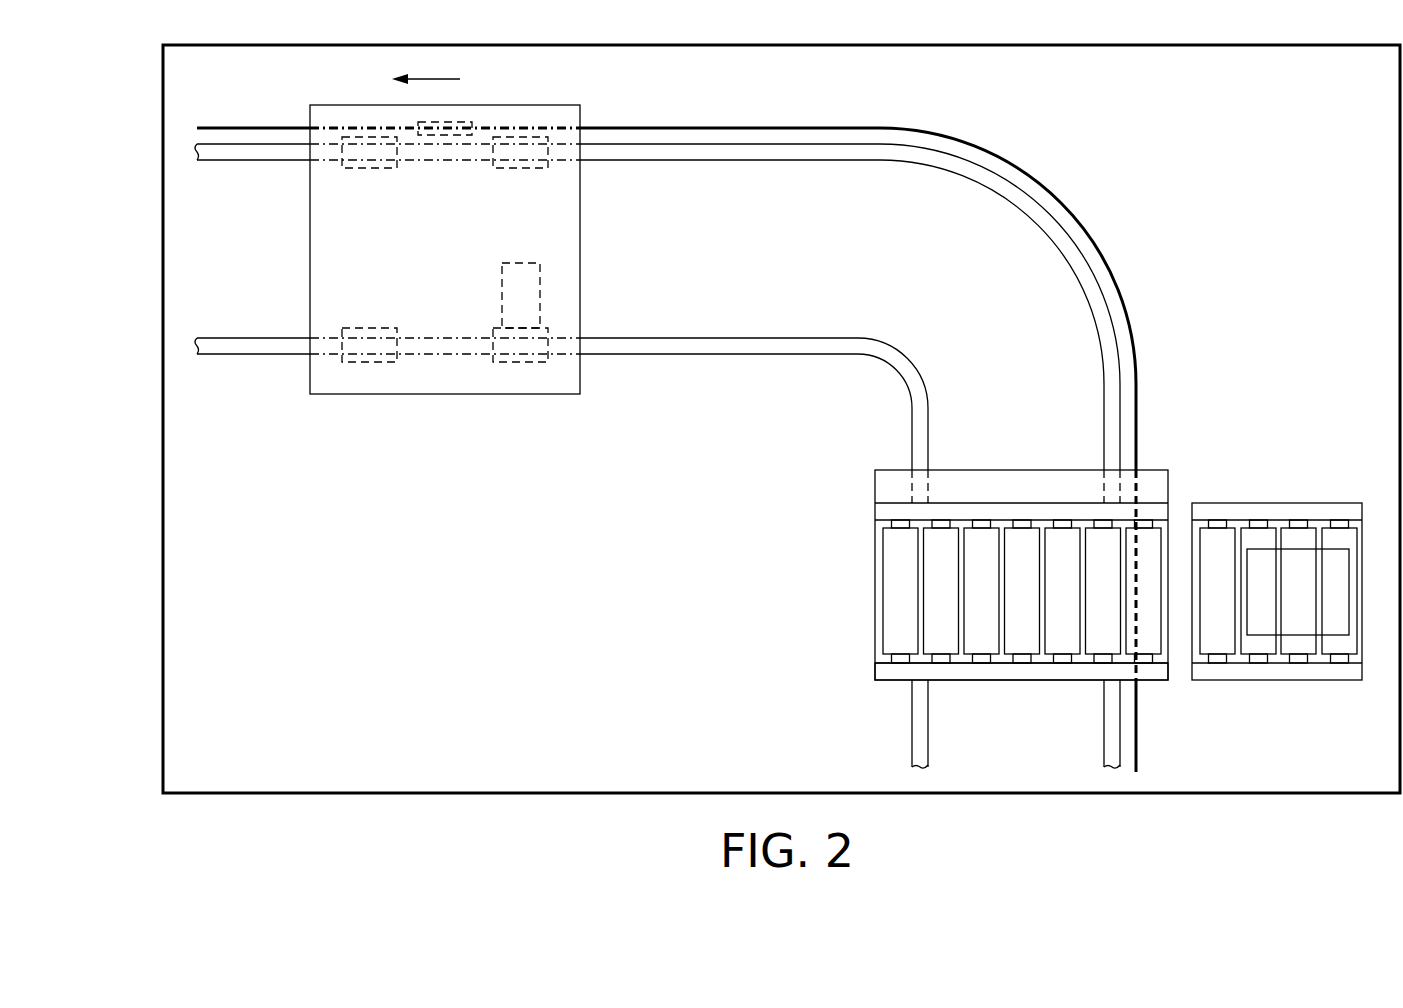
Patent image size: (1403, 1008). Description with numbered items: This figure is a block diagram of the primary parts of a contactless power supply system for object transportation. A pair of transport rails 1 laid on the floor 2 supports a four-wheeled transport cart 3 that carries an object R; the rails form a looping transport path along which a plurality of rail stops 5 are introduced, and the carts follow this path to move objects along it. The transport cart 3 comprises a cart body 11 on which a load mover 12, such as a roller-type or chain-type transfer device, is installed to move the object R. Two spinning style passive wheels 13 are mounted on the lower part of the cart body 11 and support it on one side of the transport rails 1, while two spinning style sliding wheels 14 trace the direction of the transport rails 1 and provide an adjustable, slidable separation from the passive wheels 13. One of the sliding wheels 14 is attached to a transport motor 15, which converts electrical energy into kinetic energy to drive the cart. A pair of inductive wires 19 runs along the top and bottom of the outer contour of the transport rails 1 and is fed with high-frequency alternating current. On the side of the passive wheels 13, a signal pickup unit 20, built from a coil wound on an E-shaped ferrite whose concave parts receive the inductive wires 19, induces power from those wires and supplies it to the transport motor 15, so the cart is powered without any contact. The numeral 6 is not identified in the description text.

The transport rails 1 is at (1108, 730).
The floor 2 is at (588, 650).
The transport cart 3 is at (588, 120).
The rail stop 5 is at (1222, 503).
The roller 6 is at (1342, 537).
The cart body 11 is at (875, 672).
The load mover 12 is at (875, 594).
The spinning style passive wheels 13 is at (367, 135).
The spinning style sliding wheels 14 is at (373, 363).
The transport motor 15 is at (540, 283).
The inductive wires 19 is at (1108, 277).
The signal pickup unit 20 is at (443, 120).
The object R is at (1292, 578).